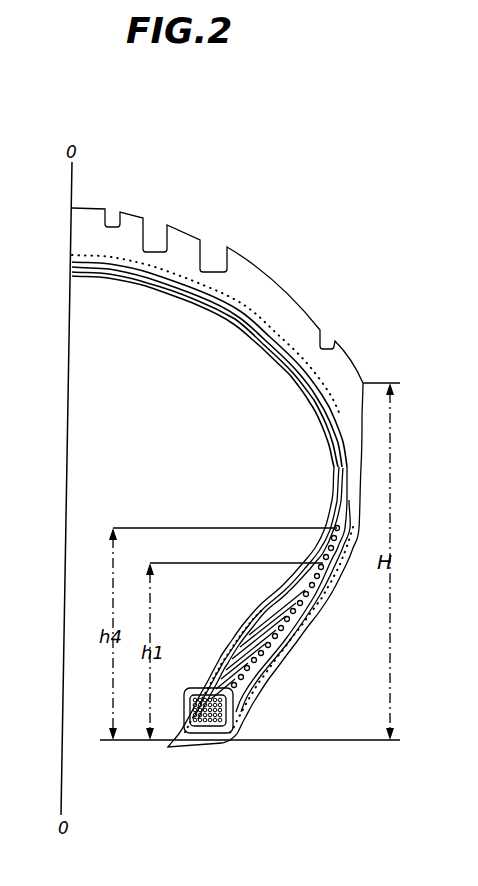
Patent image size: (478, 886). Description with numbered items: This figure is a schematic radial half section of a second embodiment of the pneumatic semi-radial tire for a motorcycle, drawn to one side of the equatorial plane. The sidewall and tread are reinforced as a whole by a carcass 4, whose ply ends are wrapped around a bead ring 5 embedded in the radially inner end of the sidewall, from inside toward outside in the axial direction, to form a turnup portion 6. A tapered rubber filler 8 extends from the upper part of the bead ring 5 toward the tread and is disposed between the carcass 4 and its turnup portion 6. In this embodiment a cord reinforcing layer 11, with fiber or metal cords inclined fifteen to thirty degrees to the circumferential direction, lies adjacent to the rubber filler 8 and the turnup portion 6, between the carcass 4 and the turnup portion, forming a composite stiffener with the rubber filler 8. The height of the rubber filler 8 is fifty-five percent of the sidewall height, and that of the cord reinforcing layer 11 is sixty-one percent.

The carcass 4 is at (340, 467).
The bead ring 5 is at (208, 727).
The turnup portion 6 is at (333, 570).
The rubber filler 8 is at (255, 632).
The cord reinforcing layer 11 is at (313, 599).